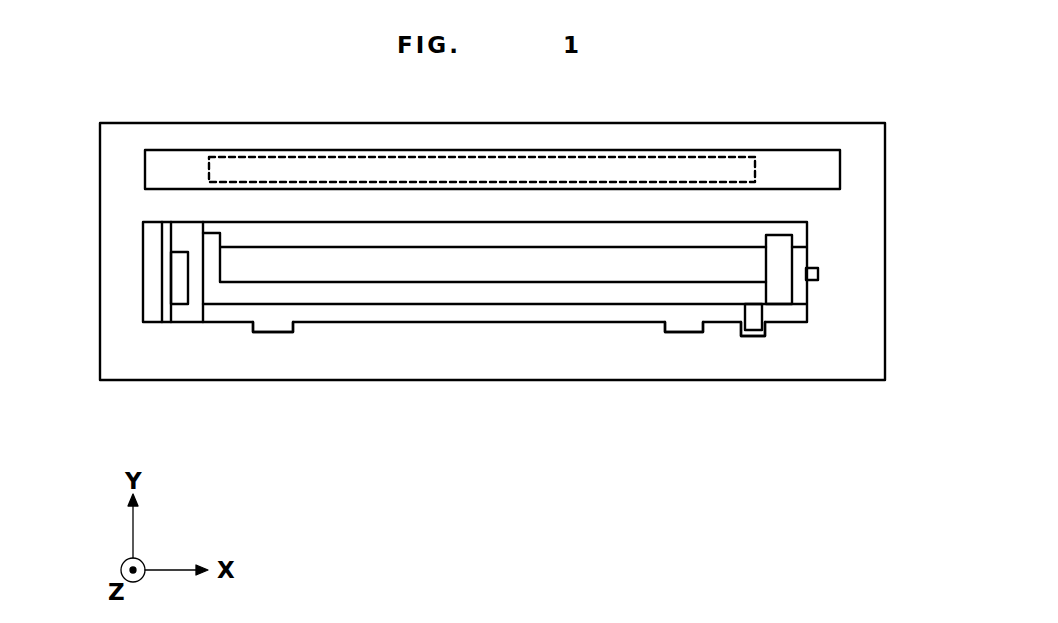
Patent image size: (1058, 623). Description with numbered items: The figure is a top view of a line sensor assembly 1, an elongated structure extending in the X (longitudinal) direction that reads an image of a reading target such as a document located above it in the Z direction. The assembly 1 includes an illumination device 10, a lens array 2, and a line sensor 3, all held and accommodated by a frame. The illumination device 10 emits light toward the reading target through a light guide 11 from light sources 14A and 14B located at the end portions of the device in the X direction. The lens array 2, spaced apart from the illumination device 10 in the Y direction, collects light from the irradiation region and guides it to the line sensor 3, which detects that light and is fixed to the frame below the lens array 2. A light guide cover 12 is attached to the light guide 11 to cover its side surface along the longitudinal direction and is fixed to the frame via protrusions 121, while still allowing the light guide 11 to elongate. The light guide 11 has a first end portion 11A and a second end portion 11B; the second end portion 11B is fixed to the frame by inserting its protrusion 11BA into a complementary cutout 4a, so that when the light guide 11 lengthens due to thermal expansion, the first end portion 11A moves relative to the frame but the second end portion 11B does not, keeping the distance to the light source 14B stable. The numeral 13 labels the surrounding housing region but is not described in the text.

The line sensor assembly 1 is at (222, 90).
The lens array 2 is at (803, 163).
The line sensor 3 is at (680, 157).
The illumination device 10 is at (822, 228).
The light guide 11 is at (183, 231).
The first end portion 11A is at (183, 325).
The second end portion 11B is at (763, 346).
The protrusion 11BA is at (767, 325).
The light guide cover 12 is at (558, 290).
The protrusions 121 is at (272, 318).
The package base 13 is at (867, 322).
The light source 14A is at (181, 283).
The light source 14B is at (797, 293).
The cutout 4a is at (752, 337).